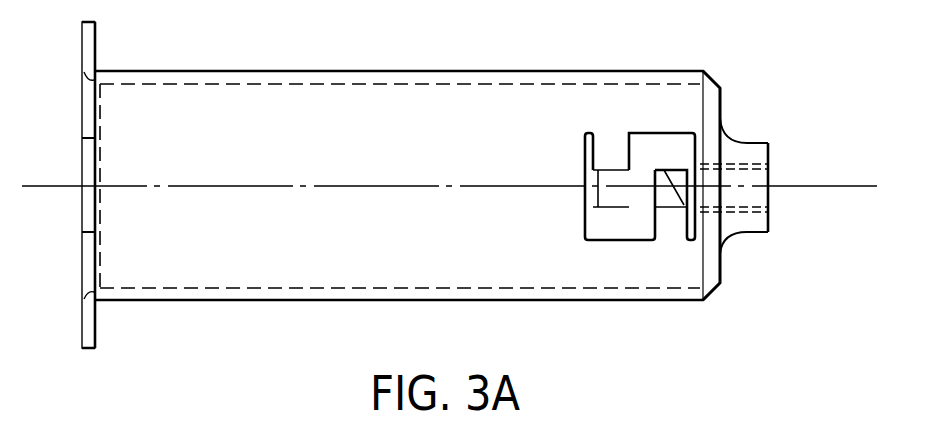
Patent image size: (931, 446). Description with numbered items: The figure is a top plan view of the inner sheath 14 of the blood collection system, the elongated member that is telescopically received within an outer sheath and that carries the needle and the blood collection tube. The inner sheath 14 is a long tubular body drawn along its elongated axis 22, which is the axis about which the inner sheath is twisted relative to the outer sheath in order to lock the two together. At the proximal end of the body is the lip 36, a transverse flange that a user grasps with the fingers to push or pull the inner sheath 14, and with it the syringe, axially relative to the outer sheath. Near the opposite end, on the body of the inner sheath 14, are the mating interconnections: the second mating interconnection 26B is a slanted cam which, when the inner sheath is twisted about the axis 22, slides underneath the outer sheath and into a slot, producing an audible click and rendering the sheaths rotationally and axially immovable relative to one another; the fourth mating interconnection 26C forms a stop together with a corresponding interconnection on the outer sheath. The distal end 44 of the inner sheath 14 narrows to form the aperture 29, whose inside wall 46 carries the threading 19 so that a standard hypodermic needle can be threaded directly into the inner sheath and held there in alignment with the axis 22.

The inner sheath 14 is at (306, 302).
The lip 36 is at (96, 326).
The elongated axis 22 is at (397, 186).
The second mating interconnection 26B is at (677, 147).
The fourth mating interconnection 26C is at (603, 132).
The end 44 is at (757, 100).
The threading section 19 is at (737, 217).
The inside wall 46 is at (749, 168).
The aperture 29 is at (758, 184).